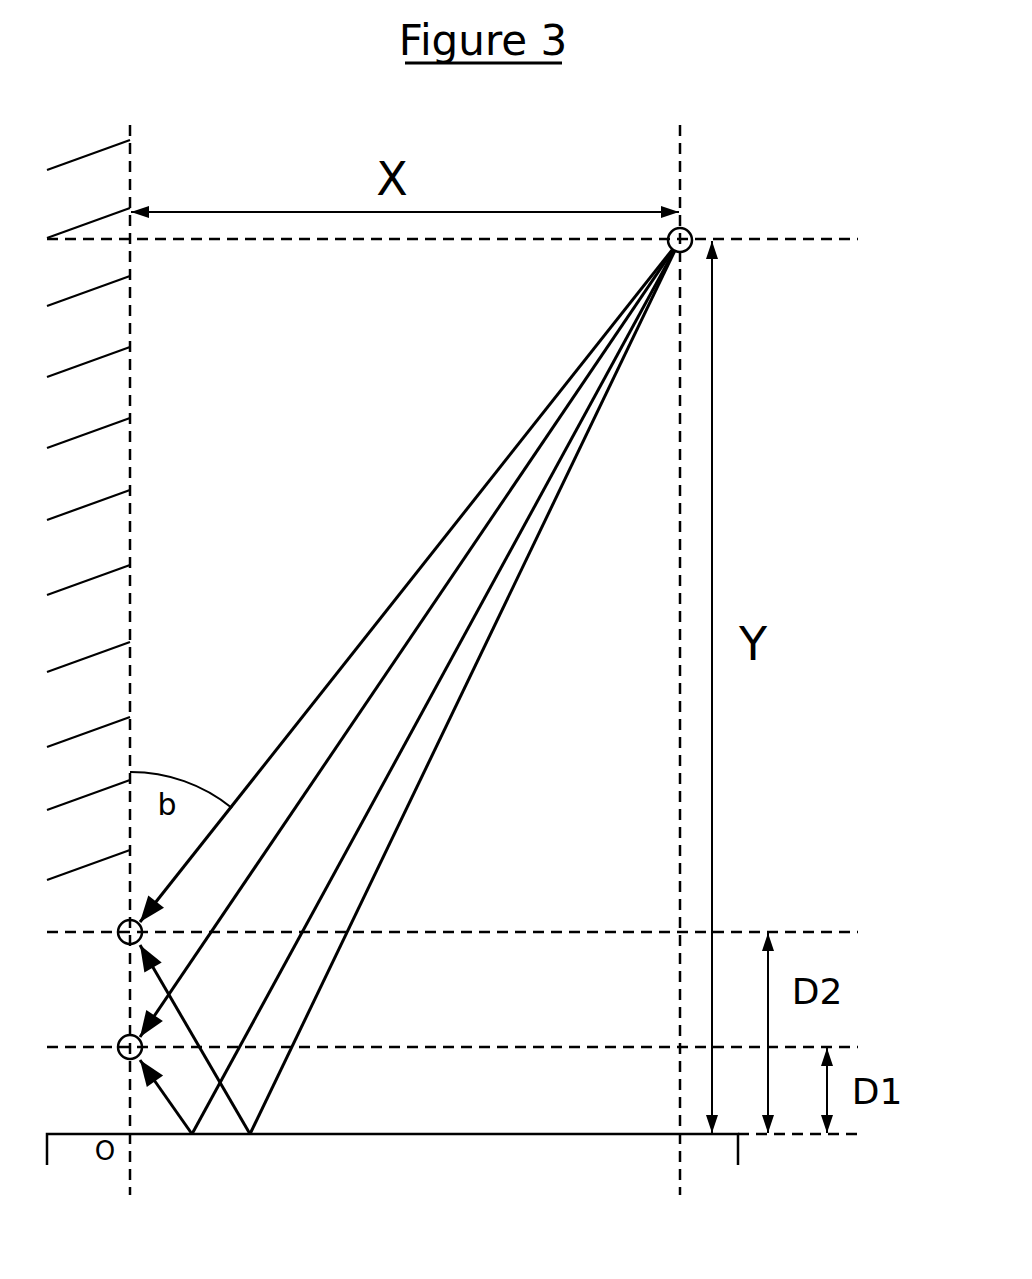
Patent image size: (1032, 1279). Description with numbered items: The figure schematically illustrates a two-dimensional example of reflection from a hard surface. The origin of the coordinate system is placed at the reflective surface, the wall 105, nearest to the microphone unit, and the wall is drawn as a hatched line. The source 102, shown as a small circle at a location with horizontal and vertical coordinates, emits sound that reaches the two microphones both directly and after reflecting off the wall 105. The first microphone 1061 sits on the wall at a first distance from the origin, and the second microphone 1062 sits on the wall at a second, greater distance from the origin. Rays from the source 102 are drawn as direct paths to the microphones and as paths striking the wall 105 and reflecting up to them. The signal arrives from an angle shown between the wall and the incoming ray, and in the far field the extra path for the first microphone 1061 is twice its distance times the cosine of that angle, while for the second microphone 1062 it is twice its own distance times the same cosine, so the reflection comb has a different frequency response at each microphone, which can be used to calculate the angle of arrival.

The wall 105 is at (132, 162).
The source 102 is at (690, 232).
The microphone 2 1062 is at (118, 936).
The microphone 1 1061 is at (118, 1042).